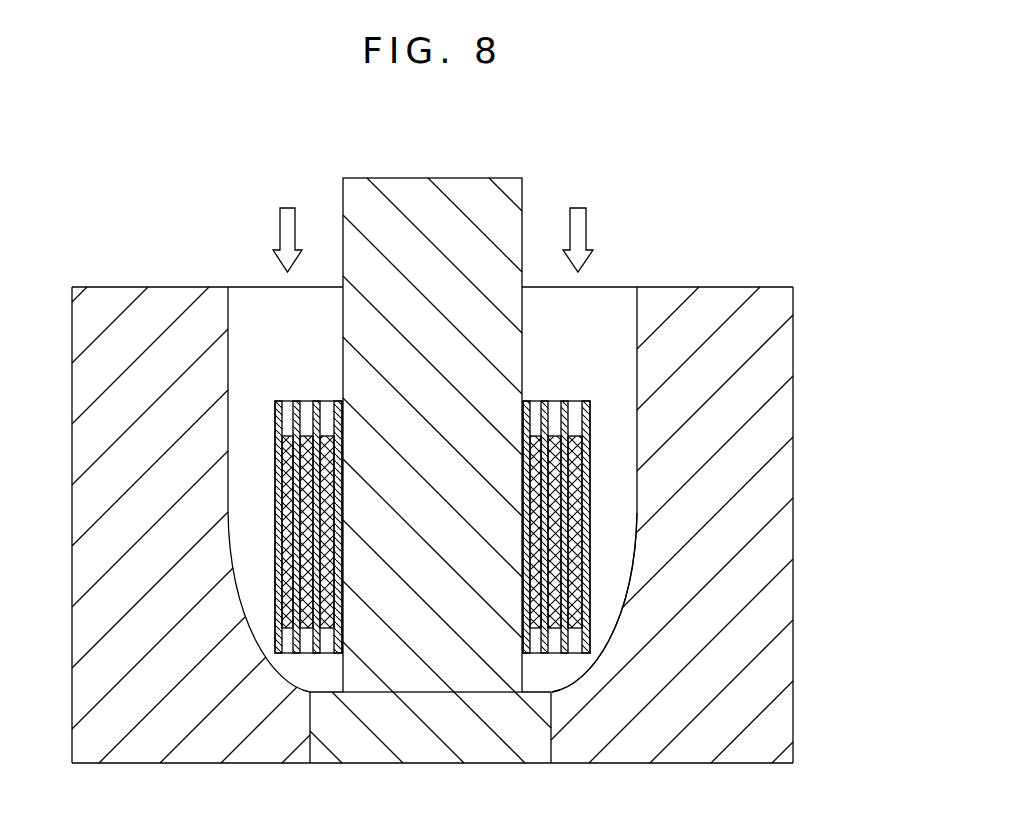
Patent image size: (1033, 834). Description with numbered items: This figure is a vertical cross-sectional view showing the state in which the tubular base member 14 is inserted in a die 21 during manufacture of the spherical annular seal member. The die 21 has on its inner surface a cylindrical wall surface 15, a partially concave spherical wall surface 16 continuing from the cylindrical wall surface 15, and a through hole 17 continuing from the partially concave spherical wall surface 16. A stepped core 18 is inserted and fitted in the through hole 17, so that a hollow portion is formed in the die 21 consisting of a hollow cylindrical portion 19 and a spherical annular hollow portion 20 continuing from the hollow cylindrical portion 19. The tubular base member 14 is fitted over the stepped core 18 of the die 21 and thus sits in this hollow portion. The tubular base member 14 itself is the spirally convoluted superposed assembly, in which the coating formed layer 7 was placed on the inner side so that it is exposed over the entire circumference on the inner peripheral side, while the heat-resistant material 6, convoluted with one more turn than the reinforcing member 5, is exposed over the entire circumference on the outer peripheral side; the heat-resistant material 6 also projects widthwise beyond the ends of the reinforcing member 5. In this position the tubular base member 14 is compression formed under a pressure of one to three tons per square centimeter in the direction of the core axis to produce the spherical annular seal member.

The reinforcing member 5 is at (287, 437).
The heat-resistant material 6 is at (273, 440).
The coating formed layer 7 is at (343, 470).
The tubular base member 14 is at (585, 388).
The cylindrical wall surface 15 is at (637, 408).
The partially concave spherical wall surface 16 is at (611, 614).
The through hole 17 is at (551, 735).
The stepped core 18 is at (422, 738).
The hollow cylindrical portion 19 is at (615, 455).
The spherical annular hollow portion 20 is at (600, 585).
The die 21 is at (137, 397).